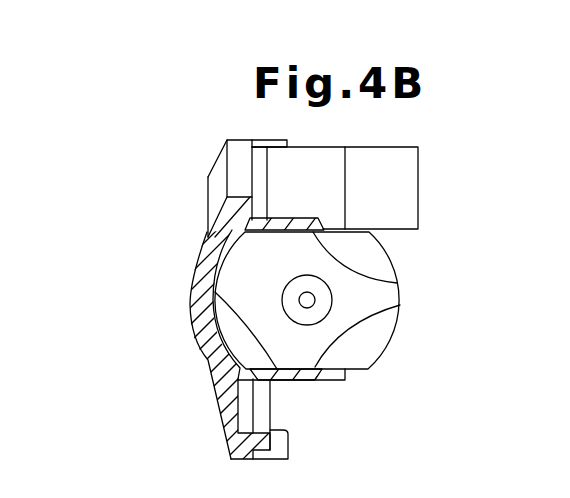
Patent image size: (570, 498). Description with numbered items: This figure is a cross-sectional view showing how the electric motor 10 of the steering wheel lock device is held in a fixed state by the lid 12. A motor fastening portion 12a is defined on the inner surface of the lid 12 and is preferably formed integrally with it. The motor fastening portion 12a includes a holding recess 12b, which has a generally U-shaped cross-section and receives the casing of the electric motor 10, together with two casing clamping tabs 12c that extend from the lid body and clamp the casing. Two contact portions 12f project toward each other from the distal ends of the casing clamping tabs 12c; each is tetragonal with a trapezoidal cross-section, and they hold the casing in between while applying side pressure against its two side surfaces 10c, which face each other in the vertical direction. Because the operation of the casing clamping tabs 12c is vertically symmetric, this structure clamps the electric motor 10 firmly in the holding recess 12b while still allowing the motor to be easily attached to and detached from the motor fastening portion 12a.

The electric motor 10 is at (395, 356).
The side surfaces 10c is at (362, 229).
The lid 12 is at (302, 451).
The motor fastening portion 12a is at (436, 259).
The holding recess 12b is at (207, 322).
The casing clamping tabs 12c is at (290, 227).
The contact portions 12f is at (398, 306).